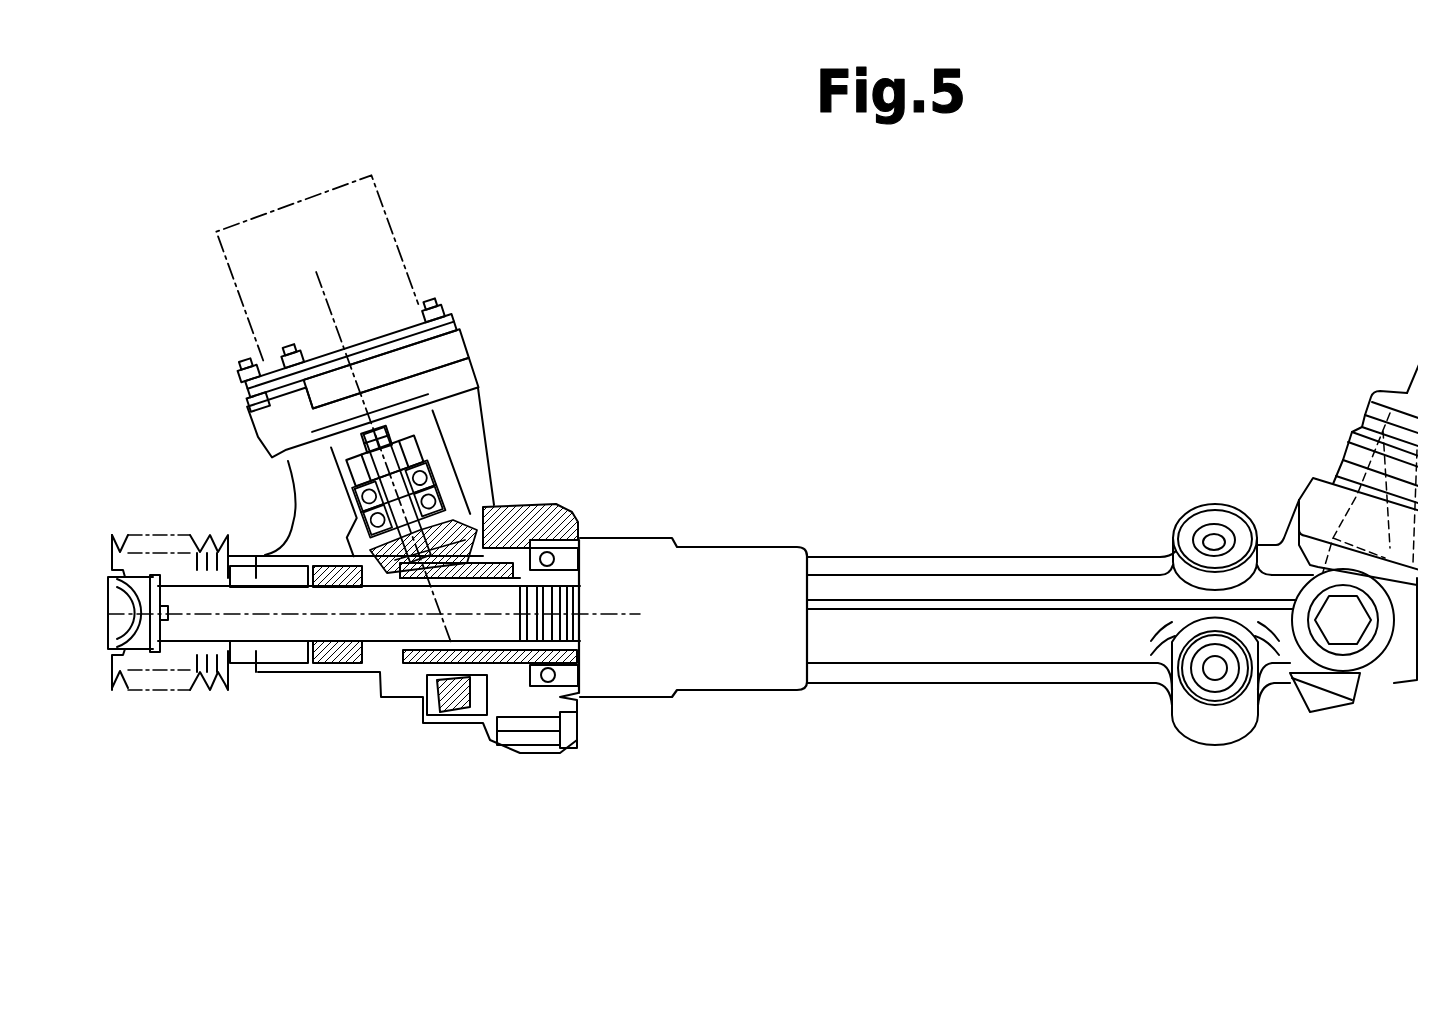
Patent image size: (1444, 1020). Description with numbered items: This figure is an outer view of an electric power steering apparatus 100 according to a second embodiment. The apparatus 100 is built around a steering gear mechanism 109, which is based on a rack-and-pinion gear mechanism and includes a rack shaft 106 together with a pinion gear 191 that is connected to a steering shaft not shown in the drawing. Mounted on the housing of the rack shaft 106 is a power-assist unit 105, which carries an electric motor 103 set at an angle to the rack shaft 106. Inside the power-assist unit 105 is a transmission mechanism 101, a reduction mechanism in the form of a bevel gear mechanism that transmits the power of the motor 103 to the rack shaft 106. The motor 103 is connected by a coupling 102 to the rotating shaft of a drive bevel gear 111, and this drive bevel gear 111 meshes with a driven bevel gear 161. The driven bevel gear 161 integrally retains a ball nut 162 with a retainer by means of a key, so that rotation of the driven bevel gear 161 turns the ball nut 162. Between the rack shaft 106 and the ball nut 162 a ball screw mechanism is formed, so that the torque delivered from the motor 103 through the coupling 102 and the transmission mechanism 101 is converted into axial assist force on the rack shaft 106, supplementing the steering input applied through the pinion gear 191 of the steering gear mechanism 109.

The electric power steering apparatus 100 is at (1277, 216).
The transmission mechanism 101 is at (472, 505).
The coupling 102 is at (385, 418).
The electric motor 103 is at (400, 258).
The power-assist unit 105 is at (534, 359).
The rack shaft 106 is at (393, 636).
The steering gear mechanism 109 is at (1264, 494).
The drive bevel gear 111 is at (332, 552).
The driven bevel gear 161 is at (490, 505).
The ball nut 162 is at (580, 548).
The pinion gear 191 is at (1345, 668).